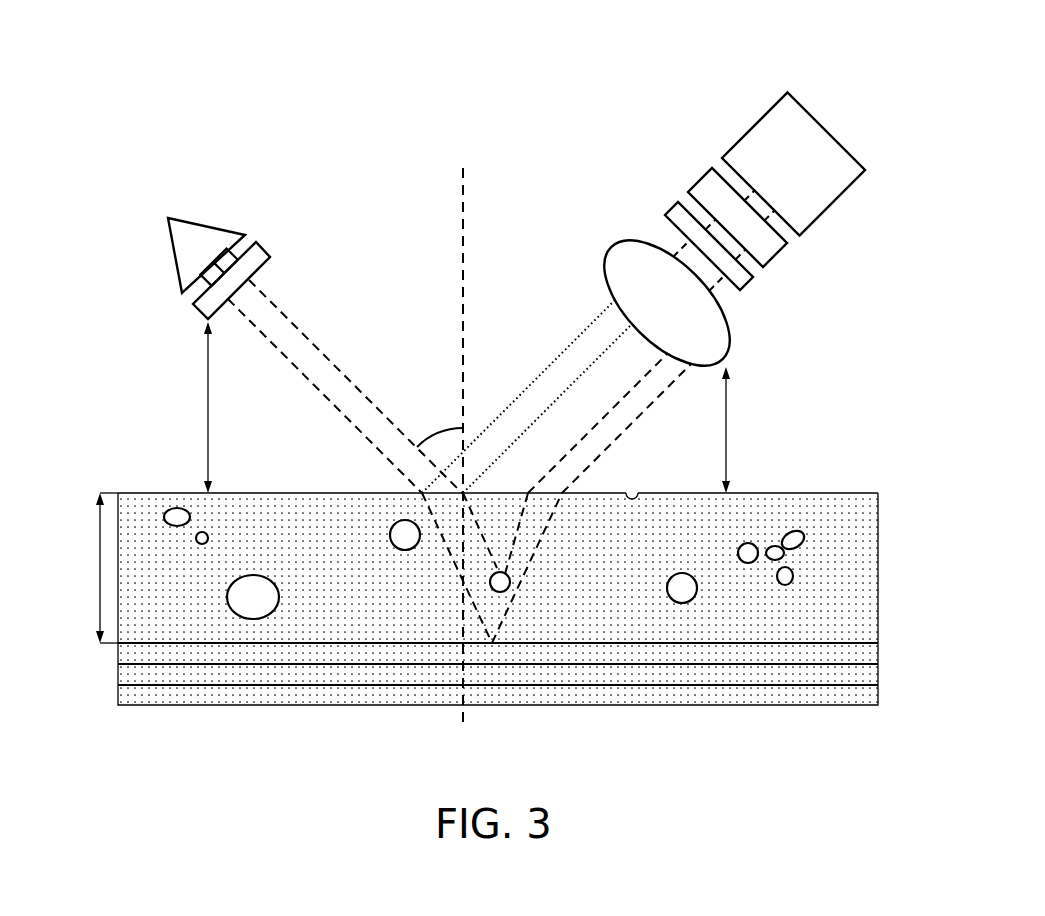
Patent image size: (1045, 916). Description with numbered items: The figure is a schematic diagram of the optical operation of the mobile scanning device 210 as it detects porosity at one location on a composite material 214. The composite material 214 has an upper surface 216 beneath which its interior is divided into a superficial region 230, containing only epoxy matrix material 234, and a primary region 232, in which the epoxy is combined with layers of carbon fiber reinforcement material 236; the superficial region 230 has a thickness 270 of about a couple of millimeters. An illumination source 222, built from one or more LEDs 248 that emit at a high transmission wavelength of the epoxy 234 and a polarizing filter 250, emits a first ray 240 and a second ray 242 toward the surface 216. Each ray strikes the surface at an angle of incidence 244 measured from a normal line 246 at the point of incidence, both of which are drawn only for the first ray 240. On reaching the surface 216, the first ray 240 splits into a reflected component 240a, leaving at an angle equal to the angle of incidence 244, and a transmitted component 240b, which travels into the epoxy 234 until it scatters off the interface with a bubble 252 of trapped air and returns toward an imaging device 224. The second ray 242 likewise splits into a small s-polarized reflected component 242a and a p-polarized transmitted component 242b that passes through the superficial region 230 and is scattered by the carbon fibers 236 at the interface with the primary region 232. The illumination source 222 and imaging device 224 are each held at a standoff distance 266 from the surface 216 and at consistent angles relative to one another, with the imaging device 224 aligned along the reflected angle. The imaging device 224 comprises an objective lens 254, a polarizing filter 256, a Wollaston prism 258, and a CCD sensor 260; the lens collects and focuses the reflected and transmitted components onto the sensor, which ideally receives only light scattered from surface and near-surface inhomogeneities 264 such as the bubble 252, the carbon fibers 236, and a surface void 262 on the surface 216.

The mobile scanning device 210 is at (262, 92).
The composite material 214 is at (160, 493).
The upper surface 216 is at (797, 483).
The illumination source 222 is at (128, 222).
The imaging device 224 is at (853, 328).
The superficial region 230 is at (533, 571).
The primary region 232 is at (868, 695).
The epoxy matrix material 234 is at (878, 563).
The carbon fiber reinforcement material 236 is at (867, 688).
The first ray 240 is at (313, 343).
The reflected component 240a is at (585, 372).
The transmitted component 240b is at (531, 491).
The second ray 242 is at (300, 371).
The reflected component 242a is at (535, 380).
The transmitted component 242b is at (452, 560).
The angle of incidence 244 is at (437, 430).
The normal line 246 is at (468, 198).
The LEDs 248 is at (205, 222).
The polarizing filter 250 is at (265, 248).
The bubble 252 is at (507, 585).
The objective lens 254 is at (632, 243).
The polarizing filter 256 is at (745, 292).
The Wollaston prism 258 is at (700, 180).
The CCD sensor 260 is at (828, 210).
The surface void 262 is at (634, 488).
The inhomogeneities 264 is at (813, 578).
The standoff distance 266 is at (206, 357).
The thickness 270 is at (100, 572).